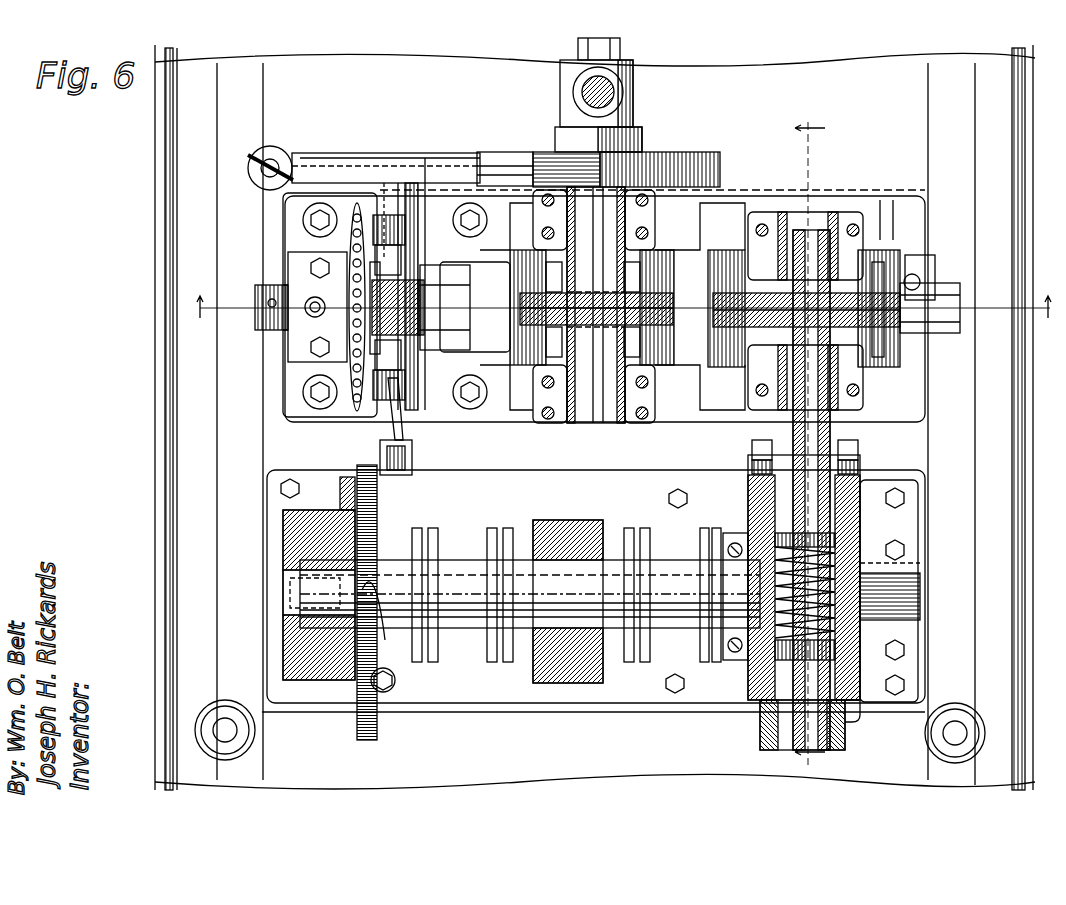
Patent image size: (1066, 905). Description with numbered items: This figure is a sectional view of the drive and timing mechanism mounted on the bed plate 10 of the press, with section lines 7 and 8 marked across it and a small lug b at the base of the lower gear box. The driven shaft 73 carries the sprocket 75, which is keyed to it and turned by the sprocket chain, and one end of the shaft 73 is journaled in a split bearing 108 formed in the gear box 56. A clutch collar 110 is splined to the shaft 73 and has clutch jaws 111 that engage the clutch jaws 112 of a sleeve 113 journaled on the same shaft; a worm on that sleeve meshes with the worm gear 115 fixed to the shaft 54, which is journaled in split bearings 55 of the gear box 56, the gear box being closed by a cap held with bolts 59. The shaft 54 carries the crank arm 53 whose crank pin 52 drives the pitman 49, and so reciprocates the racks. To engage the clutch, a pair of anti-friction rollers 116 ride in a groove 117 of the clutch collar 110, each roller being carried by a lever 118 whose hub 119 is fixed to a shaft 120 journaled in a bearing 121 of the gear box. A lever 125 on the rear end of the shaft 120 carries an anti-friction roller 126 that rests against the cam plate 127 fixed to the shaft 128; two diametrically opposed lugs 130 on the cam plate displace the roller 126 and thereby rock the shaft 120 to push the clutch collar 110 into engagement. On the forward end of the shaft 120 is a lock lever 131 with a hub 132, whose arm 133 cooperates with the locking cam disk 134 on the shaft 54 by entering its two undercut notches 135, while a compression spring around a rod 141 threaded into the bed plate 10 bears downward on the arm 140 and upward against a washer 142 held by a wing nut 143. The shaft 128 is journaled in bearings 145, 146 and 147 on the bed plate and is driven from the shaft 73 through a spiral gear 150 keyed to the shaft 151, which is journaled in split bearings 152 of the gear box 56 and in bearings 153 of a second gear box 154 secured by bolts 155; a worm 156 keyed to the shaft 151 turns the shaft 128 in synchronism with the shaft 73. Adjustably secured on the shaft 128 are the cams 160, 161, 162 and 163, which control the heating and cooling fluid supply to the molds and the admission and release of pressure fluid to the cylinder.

The bed plate 10 is at (185, 112).
The section line 7- 7 is at (621, 300).
The section line 8- 8 is at (800, 442).
The pitman 49 is at (625, 92).
The crank pin 52 is at (634, 122).
The crank arm 53 is at (643, 140).
The shaft 54 is at (590, 422).
The split bearings 55 is at (648, 214).
The gear box 56 is at (685, 250).
The bolts 59 is at (660, 438).
The driven shaft 73 is at (268, 315).
The sprocket 75 is at (357, 205).
The split bearing 108 is at (935, 290).
The clutch collar 110 is at (415, 280).
The clutch jaws 111 is at (455, 330).
The clutch jaws 112 is at (418, 345).
The sleeve 113 is at (405, 220).
The worm gear 115 is at (580, 330).
The anti-friction rollers 116 is at (402, 258).
The groove 117 is at (395, 308).
The lever 118 is at (426, 158).
The hub 119 is at (398, 183).
The shaft 120 is at (412, 183).
The bearing 121 is at (345, 292).
The lever 125 is at (412, 430).
The anti-friction roller 126 is at (412, 462).
The cam plate 127 is at (357, 726).
The shaft 128 is at (292, 582).
The lugs 130 is at (380, 570).
The lock lever 131 is at (332, 152).
The hub 132 is at (384, 182).
The arm 133 is at (480, 150).
The locking cam disk 134 is at (720, 172).
The notches 135 is at (590, 168).
The arm 140 is at (307, 155).
The rod 141 is at (265, 178).
The washer 142 is at (258, 176).
The wing nut 143 is at (256, 158).
The bearing 145 is at (290, 657).
The bearing 146 is at (530, 611).
The bearing 147 is at (910, 590).
The spiral gear 150 is at (888, 285).
The shaft 151 is at (830, 430).
The split bearings 152 is at (838, 220).
The bearings 153 is at (860, 480).
The gear box 154 is at (840, 590).
The bolts 155 is at (905, 498).
The worm 156 is at (838, 540).
The cam 160 is at (435, 662).
The cam 161 is at (503, 665).
The cam 162 is at (630, 665).
The cam 163 is at (702, 665).
The lug b is at (845, 722).